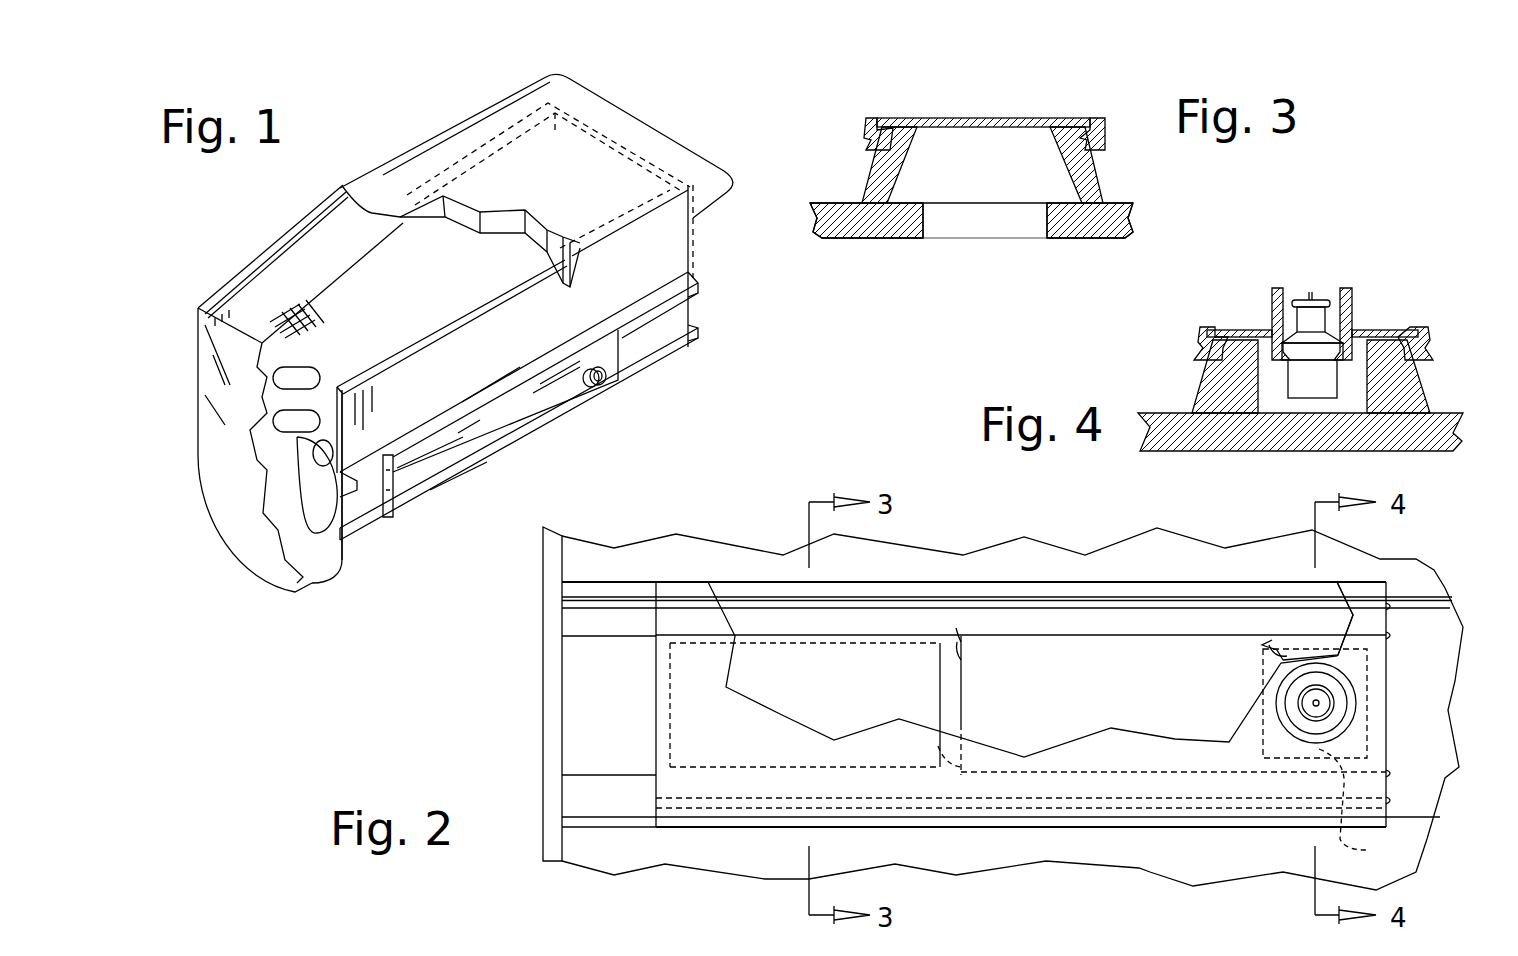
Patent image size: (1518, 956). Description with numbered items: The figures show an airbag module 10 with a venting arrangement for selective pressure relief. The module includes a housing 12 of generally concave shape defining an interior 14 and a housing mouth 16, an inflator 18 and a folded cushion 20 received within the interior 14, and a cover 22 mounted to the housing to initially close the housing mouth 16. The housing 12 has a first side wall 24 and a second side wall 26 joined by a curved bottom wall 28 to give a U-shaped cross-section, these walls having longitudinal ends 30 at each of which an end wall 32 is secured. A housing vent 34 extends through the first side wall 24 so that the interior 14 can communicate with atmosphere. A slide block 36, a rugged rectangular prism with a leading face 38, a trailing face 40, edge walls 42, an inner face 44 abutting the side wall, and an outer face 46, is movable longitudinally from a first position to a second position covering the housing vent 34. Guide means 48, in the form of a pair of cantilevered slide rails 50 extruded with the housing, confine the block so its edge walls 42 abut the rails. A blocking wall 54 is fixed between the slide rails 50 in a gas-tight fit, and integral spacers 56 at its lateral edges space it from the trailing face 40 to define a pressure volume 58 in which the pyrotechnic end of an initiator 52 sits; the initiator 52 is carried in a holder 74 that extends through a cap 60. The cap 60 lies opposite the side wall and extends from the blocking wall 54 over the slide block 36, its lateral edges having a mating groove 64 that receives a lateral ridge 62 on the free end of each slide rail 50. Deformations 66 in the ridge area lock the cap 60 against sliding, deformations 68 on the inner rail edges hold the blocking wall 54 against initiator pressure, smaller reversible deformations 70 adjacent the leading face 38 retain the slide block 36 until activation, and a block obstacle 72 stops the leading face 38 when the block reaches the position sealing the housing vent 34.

In FIG. 1, the airbag module 10 is at (400, 130).
In FIG. 1, the housing 12 is at (215, 305).
In FIG. 1, the interior 14 is at (293, 580).
In FIG. 1, the housing mouth 16 is at (478, 303).
In FIG. 1, the inflator 18 is at (285, 512).
In FIG. 1, the cushion 20 is at (335, 290).
In FIG. 1, the cover 22 is at (645, 140).
In FIG. 1, the first side wall 24 is at (540, 305).
In FIG. 3, the first side wall 24 is at (1060, 238).
In FIG. 4, the first side wall 24 is at (1200, 445).
In FIG. 2, the first side wall 24 is at (585, 690).
In FIG. 1, the second side wall 26 is at (345, 245).
In FIG. 1, the bottom wall 28 is at (322, 575).
In FIG. 1, the longitudinal ends 30 is at (688, 233).
In FIG. 1, the end wall 32 is at (225, 460).
In FIG. 2, the end wall 32 is at (543, 742).
In FIG. 1, the housing vent 34 is at (388, 517).
In FIG. 3, the housing vent 34 is at (1040, 215).
In FIG. 2, the housing vent 34 is at (940, 676).
In FIG. 3, the slide block 36 is at (1053, 178).
In FIG. 2, the slide block 36 is at (1084, 676).
In FIG. 3, the leading face 38 is at (979, 175).
In FIG. 2, the leading face 38 is at (962, 710).
In FIG. 2, the trailing face 40 is at (1272, 652).
In FIG. 3, the edge walls 42 is at (875, 195).
In FIG. 3, the inner face 44 is at (960, 205).
In FIG. 3, the outer face 46 is at (985, 122).
In FIG. 1, the guide means 48 is at (675, 347).
In FIG. 2, the guide means 48 is at (1440, 612).
In FIG. 1, the slide rails 50 is at (700, 290).
In FIG. 3, the slide rails 50 is at (875, 170).
In FIG. 4, the slide rails 50 is at (1195, 402).
In FIG. 2, the slide rails 50 is at (577, 580).
In FIG. 4, the initiator 52 is at (1330, 315).
In FIG. 2, the initiator 52 is at (1305, 715).
In FIG. 4, the blocking wall 54 is at (1355, 378).
In FIG. 2, the blocking wall 54 is at (1367, 717).
In FIG. 4, the spacers 56 is at (1345, 413).
In FIG. 2, the spacers 56 is at (1275, 645).
In FIG. 4, the pressure volume 58 is at (1263, 353).
In FIG. 2, the pressure volume 58 is at (1308, 640).
In FIG. 3, the cap 60 is at (930, 120).
In FIG. 4, the cap 60 is at (1405, 332).
In FIG. 2, the cap 60 is at (1021, 704).
In FIG. 3, the lateral ridge 62 is at (1085, 130).
In FIG. 4, the lateral ridge 62 is at (1418, 335).
In FIG. 2, the lateral ridge 62 is at (565, 600).
In FIG. 3, the mating groove 64 is at (893, 128).
In FIG. 4, the mating groove 64 is at (1232, 338).
In FIG. 2, the deformations 66 is at (642, 612).
In FIG. 2, the deformations 68 is at (1394, 637).
In FIG. 2, the reversible deformations 70 is at (955, 652).
In FIG. 2, the block obstacle 72 is at (652, 636).
In FIG. 1, the holder 74 is at (603, 385).
In FIG. 4, the holder 74 is at (1290, 292).
In FIG. 2, the holder 74 is at (1278, 680).